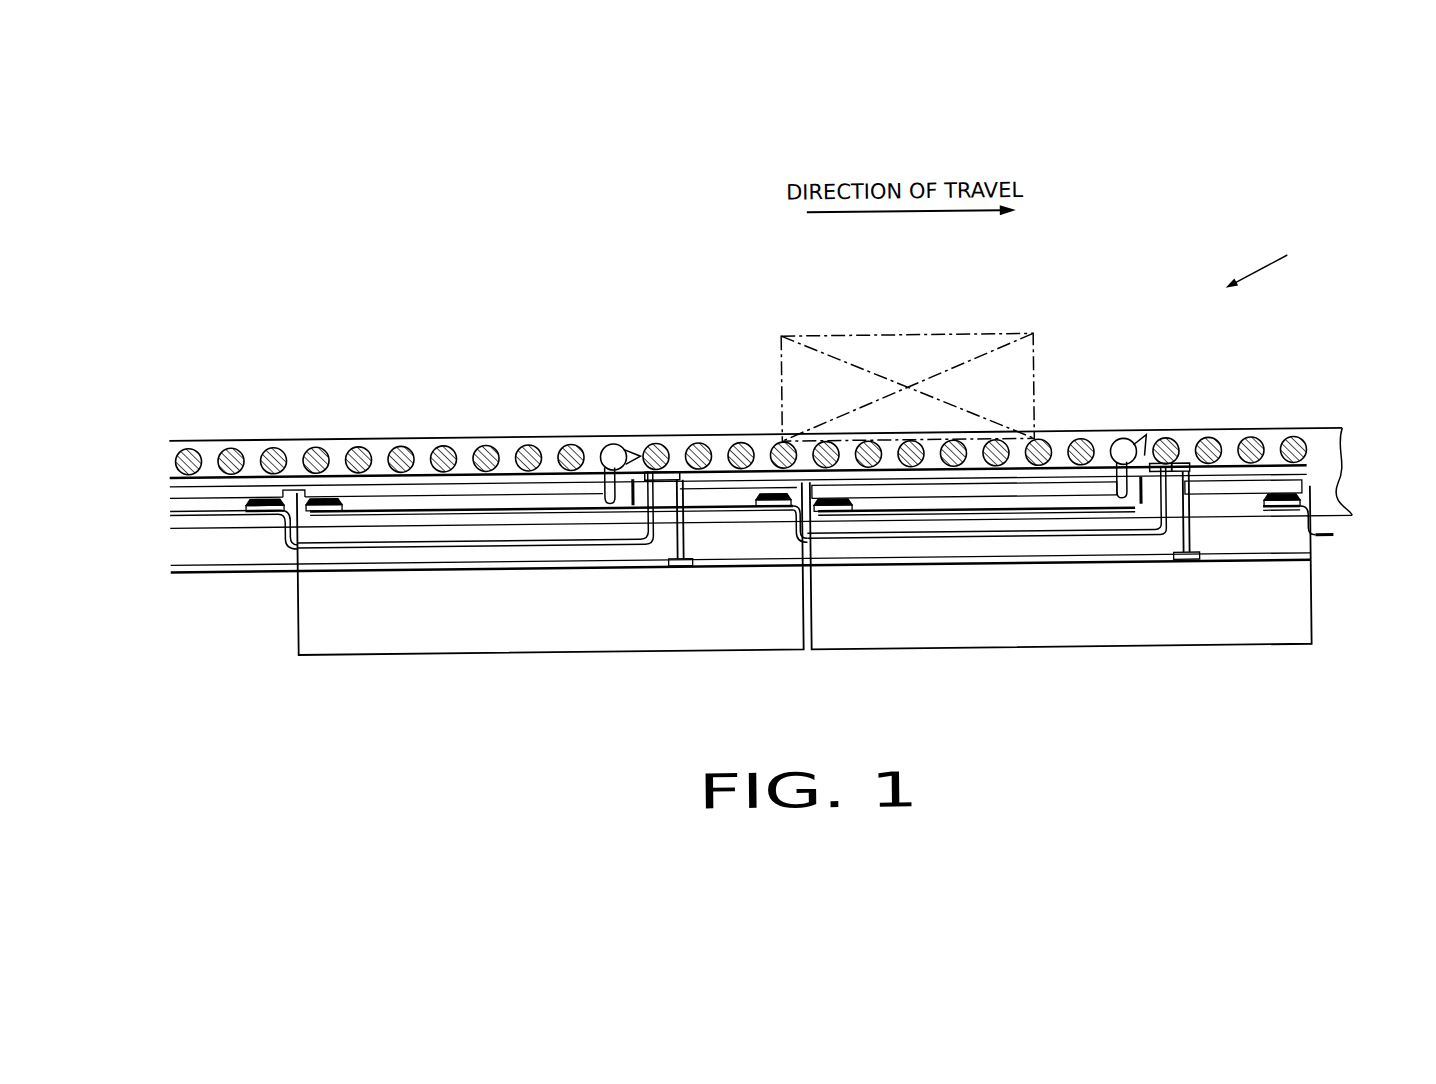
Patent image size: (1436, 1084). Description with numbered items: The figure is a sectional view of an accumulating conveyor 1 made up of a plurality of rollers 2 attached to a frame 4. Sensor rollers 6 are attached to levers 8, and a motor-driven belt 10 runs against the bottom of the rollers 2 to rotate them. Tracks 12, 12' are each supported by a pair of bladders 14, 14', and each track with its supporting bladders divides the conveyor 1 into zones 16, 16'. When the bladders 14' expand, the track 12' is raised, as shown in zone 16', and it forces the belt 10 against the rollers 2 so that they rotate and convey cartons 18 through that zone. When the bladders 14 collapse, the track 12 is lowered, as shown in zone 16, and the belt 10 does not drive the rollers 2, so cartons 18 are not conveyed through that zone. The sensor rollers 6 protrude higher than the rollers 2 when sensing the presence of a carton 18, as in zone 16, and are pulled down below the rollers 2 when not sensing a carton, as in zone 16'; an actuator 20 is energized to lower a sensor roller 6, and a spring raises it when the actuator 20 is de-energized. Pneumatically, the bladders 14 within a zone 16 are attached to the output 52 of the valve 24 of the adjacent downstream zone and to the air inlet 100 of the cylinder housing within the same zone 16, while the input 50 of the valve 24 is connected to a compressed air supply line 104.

The accumulating conveyor 1 is at (1263, 261).
The rollers 2 is at (741, 424).
The frame 4 is at (1316, 432).
The sensor rollers 6 is at (640, 449).
The levers 8 is at (615, 443).
The belt 10 is at (718, 467).
The track 12 is at (1057, 547).
The track 12' is at (489, 556).
The bladders 14 is at (1057, 551).
The bladders 14' is at (519, 560).
The zone 16 is at (1061, 586).
The zone 16' is at (550, 593).
The cartons 18 is at (912, 337).
The actuator 20 is at (648, 489).
The valve 24 is at (1163, 467).
The input of the valve 50 is at (1178, 471).
The output of the valve 52 is at (1333, 541).
The air inlet of the cylinder housing 100 is at (1132, 514).
The compressed air supply line 104 is at (1056, 562).